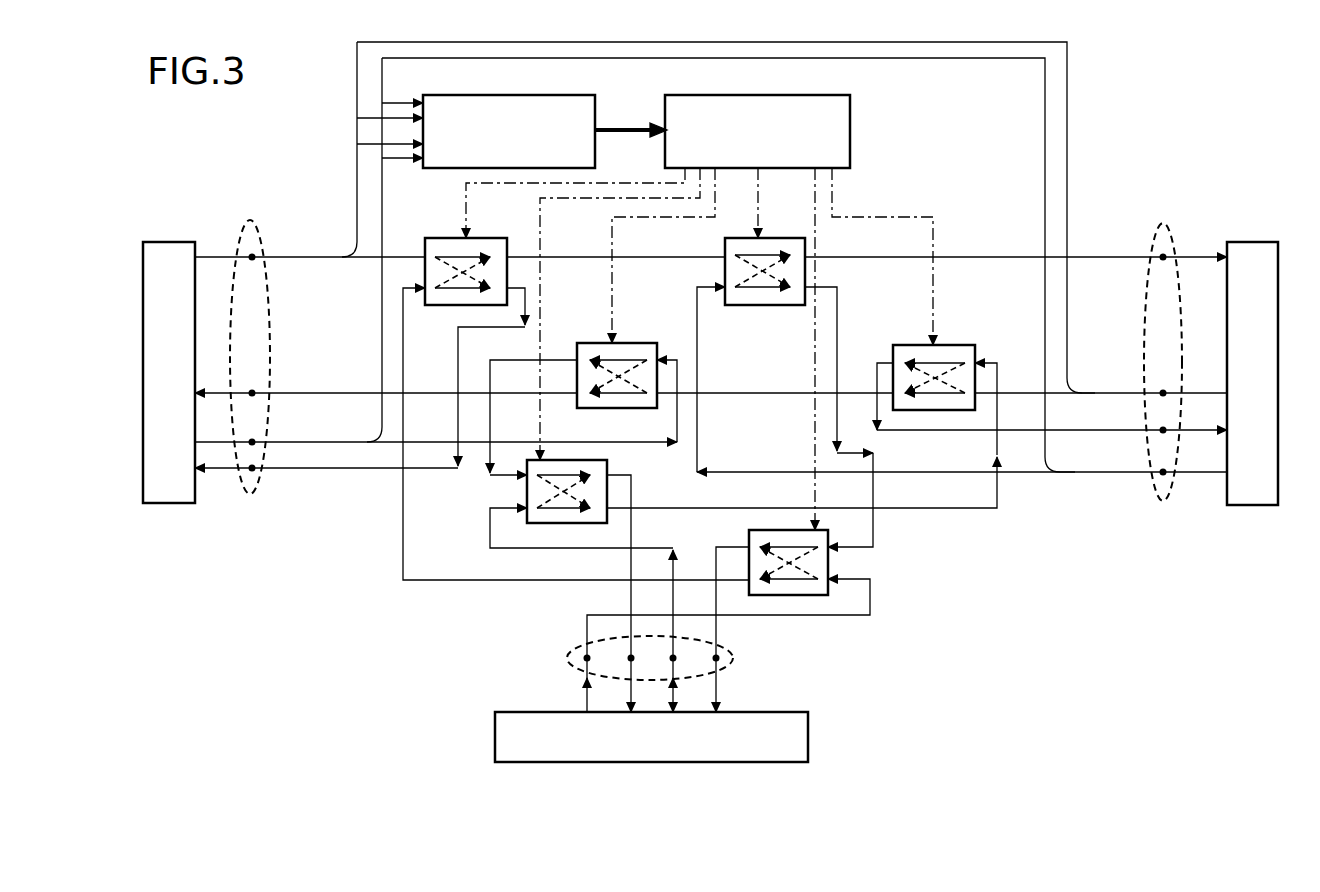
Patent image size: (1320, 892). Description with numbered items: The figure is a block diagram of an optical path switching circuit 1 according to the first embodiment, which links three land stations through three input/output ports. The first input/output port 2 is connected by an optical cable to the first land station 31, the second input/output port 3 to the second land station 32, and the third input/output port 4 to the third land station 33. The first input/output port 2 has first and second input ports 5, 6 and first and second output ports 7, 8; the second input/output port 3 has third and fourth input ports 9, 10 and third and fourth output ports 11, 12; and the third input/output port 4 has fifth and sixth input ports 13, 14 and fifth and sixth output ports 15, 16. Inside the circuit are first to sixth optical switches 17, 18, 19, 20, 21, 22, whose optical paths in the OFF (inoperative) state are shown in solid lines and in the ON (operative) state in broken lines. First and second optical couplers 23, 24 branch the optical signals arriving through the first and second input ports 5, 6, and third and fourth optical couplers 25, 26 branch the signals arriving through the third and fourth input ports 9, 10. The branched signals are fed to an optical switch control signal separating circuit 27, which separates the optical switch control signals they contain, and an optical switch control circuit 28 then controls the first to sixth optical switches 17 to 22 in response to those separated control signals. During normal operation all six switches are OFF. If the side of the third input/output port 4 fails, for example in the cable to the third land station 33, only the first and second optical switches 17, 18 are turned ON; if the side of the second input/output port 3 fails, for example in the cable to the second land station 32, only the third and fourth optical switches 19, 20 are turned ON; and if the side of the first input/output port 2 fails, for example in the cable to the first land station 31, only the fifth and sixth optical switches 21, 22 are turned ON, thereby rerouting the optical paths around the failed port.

The optical path switching circuit 1 is at (1140, 82).
The first input/output port 2 is at (250, 232).
The second input/output port 3 is at (1160, 240).
The third input/output port 4 is at (734, 655).
The first input port 5 is at (255, 258).
The second input port 6 is at (255, 443).
The first output port 7 is at (255, 391).
The second output port 8 is at (252, 495).
The third input port 9 is at (1164, 392).
The fourth input port 10 is at (1163, 478).
The third output port 11 is at (1161, 257).
The fourth output port 12 is at (1165, 432).
The fifth input port 13 is at (586, 658).
The sixth input port 14 is at (673, 658).
The fifth output port 15 is at (627, 657).
The sixth output port 16 is at (718, 660).
The first optical switch 17 is at (609, 465).
The second optical switch 18 is at (748, 530).
The third optical switch 19 is at (777, 236).
The fourth optical switch 20 is at (955, 345).
The fifth optical switch 21 is at (442, 238).
The sixth optical switch 22 is at (639, 343).
The first optical coupler 23 is at (328, 252).
The second optical coupler 24 is at (357, 439).
The third optical coupler 25 is at (1115, 381).
The fourth optical coupler 26 is at (1095, 460).
The optical switch control signal separating circuit 27 is at (530, 95).
The optical switch control circuit 28 is at (787, 95).
The first land station 31 is at (164, 242).
The second land station 32 is at (1250, 242).
The third land station 33 is at (808, 722).